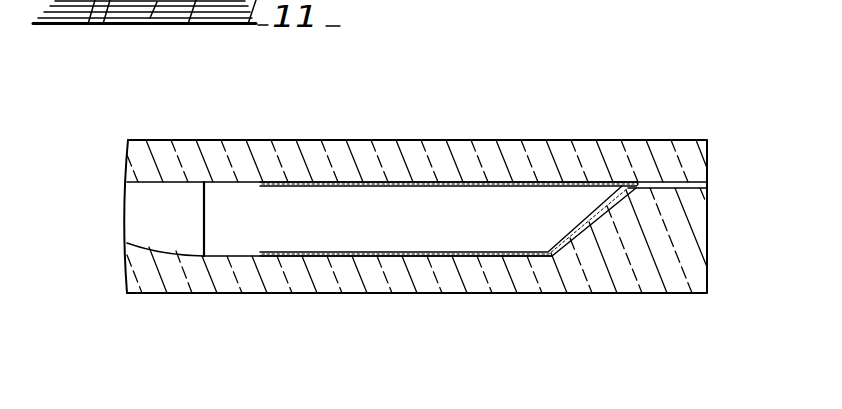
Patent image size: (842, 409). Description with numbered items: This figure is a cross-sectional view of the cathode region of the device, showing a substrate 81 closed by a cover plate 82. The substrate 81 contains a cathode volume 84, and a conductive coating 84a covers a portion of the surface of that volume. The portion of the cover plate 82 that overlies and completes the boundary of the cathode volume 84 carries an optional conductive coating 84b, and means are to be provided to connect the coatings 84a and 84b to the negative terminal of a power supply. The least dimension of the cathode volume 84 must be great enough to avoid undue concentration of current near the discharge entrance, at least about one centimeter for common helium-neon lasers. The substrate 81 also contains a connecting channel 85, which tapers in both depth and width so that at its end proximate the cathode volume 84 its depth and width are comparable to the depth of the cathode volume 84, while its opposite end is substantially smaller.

The substrate 81 is at (682, 245).
The cover plate 82 is at (678, 163).
The cathode volume 84 is at (449, 213).
The conductive coating 84a is at (392, 253).
The conductive coating 84b is at (522, 190).
The connecting channel 85 is at (152, 205).